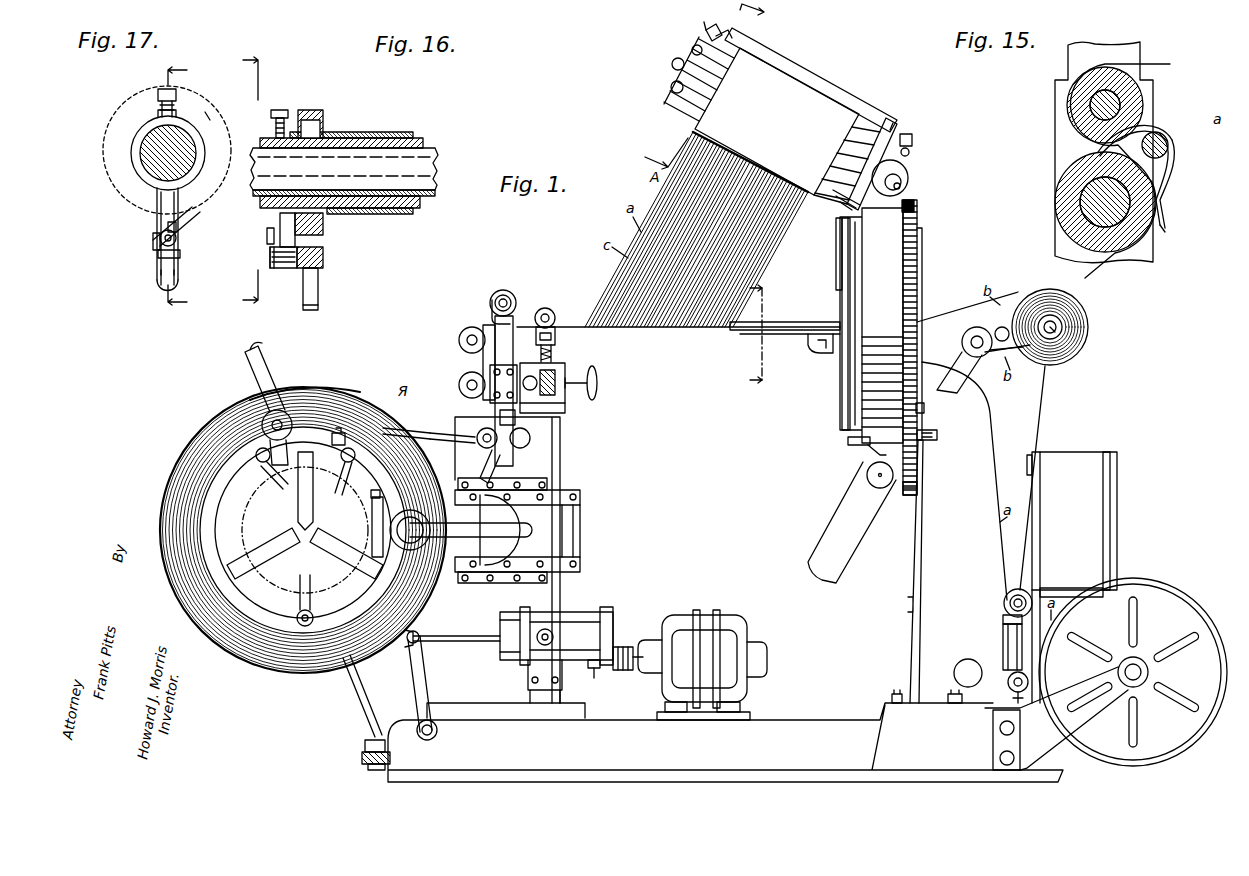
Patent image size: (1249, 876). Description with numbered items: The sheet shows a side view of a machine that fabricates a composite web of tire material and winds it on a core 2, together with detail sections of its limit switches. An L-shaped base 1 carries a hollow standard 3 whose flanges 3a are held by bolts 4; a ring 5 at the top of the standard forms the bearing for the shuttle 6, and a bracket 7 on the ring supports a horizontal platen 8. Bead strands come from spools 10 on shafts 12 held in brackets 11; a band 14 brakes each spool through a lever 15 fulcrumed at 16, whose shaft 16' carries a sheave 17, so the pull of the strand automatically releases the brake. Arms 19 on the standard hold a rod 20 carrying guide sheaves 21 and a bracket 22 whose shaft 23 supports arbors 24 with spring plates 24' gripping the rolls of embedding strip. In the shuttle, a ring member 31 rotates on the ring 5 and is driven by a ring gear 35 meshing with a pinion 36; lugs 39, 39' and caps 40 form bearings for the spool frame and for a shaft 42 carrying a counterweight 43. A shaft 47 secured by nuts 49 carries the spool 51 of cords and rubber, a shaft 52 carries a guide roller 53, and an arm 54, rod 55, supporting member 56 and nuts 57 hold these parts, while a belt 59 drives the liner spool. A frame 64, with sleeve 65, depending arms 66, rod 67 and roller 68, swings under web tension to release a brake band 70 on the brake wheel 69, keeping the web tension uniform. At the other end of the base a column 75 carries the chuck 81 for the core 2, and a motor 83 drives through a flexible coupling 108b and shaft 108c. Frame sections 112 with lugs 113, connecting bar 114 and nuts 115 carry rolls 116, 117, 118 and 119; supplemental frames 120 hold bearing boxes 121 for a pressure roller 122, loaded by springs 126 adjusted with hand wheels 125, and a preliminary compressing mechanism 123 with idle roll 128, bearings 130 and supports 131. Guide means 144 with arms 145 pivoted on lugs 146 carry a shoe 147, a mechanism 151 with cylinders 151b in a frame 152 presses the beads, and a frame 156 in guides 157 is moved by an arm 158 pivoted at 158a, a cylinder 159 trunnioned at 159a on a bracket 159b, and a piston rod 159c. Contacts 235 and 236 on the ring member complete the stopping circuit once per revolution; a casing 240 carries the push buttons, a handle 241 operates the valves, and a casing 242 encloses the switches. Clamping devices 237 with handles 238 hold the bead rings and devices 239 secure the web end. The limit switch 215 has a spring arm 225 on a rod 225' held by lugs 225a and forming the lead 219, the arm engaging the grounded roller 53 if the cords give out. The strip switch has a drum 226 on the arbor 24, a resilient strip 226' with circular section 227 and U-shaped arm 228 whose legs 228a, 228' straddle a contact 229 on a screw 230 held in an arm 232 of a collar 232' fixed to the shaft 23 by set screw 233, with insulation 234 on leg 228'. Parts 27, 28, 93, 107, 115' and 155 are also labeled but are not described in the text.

In FIG. 1, the base 1 is at (806, 722).
In FIG. 1, the core 2 is at (245, 590).
In FIG. 1, the standard 3 is at (915, 580).
In FIG. 1, the flanges 3a is at (935, 702).
In FIG. 1, the bolts 4 is at (889, 690).
In FIG. 1, the ring 5 is at (922, 240).
In FIG. 1, the shuttle 6 is at (849, 436).
In FIG. 1, the bracket 7 is at (816, 352).
In FIG. 1, the platen 8 is at (726, 330).
In FIG. 1, the spool 10 is at (1160, 603).
In FIG. 1, the brackets 11 is at (1060, 745).
In FIG. 1, the shafts 12 is at (1133, 657).
In FIG. 1, the bands 14 is at (1077, 595).
In FIG. 1, the lever 15 is at (1012, 650).
In FIG. 17, the fulcrum 16 is at (172, 185).
In FIG. 1, the fulcrum 16 is at (1002, 687).
In FIG. 1, the shaft 16' is at (998, 618).
In FIG. 16, the guide wheel or sheave 17 is at (259, 179).
In FIG. 1, the guide wheel or sheave 17 is at (1004, 603).
In FIG. 1, the arms 19 is at (959, 368).
In FIG. 1, the rod 20 is at (977, 331).
In FIG. 1, the guide sheaves 21 is at (988, 355).
In FIG. 1, the bracket 22 is at (999, 328).
In FIG. 17, the shaft 23 is at (143, 138).
In FIG. 16, the shaft 23 is at (425, 173).
In FIG. 1, the shaft 23 is at (1055, 340).
In FIG. 16, the arbor 24 is at (360, 173).
In FIG. 1, the arbor 24 is at (1083, 345).
In FIG. 16, the spring plates 24' is at (367, 119).
In FIG. 1, the guide plate 27 is at (793, 334).
In FIG. 1, the guide bar 28 is at (790, 322).
In FIG. 1, the ring member 31 is at (871, 325).
In FIG. 1, the ring gear 35 is at (917, 214).
In FIG. 1, the pinion 36 is at (907, 497).
In FIG. 1, the lugs 39 is at (919, 201).
In FIG. 1, the lugs 39' is at (851, 456).
In FIG. 1, the caps 40 is at (900, 168).
In FIG. 1, the shaft 42 is at (867, 477).
In FIG. 1, the weight 43 is at (822, 548).
In FIG. 1, the shaft 47 is at (672, 64).
In FIG. 1, the nuts 49 is at (901, 180).
In FIG. 1, the spool 51 is at (690, 92).
In FIG. 15, the shaft 52 is at (1090, 200).
In FIG. 15, the guide roller 53 is at (1065, 213).
In FIG. 1, the bracket or arm 54 is at (915, 149).
In FIG. 1, the rod 55 is at (705, 32).
In FIG. 1, the supporting member 56 is at (692, 49).
In FIG. 1, the nuts 57 is at (912, 140).
In FIG. 1, the band or belt 59 is at (836, 225).
In FIG. 1, the frame 64 is at (811, 68).
In FIG. 1, the sleeve 65 is at (822, 86).
In FIG. 15, the depending arms 66 is at (1067, 65).
In FIG. 1, the depending arms 66 is at (731, 37).
In FIG. 15, the rod 67 is at (1092, 107).
In FIG. 15, the roller 68 is at (1075, 121).
In FIG. 1, the roller 68 is at (722, 68).
In FIG. 1, the brake wheel 69 is at (895, 128).
In FIG. 1, the brake band 70 is at (891, 124).
In FIG. 1, the column 75 is at (556, 470).
In FIG. 1, the chuck 81 is at (305, 522).
In FIG. 1, the motor 83 is at (700, 618).
In FIG. 1, the link 93 is at (354, 680).
In FIG. 1, the adjusting nut 107 is at (362, 757).
In FIG. 1, the flexible coupling 108b is at (625, 646).
In FIG. 1, the shaft 108c is at (594, 678).
In FIG. 1, the upright frame sections 112 is at (497, 325).
In FIG. 1, the hollow lugs 113 is at (510, 295).
In FIG. 1, the connecting bar 114 is at (500, 290).
In FIG. 1, the nuts 115 is at (483, 302).
In FIG. 1, the reel hub shaft 115' is at (437, 530).
In FIG. 1, the roll 116 is at (461, 337).
In FIG. 1, the roll 117 is at (483, 350).
In FIG. 1, the roll 118 is at (463, 376).
In FIG. 1, the roll 119 is at (518, 412).
In FIG. 1, the supplemental frames 120 is at (560, 393).
In FIG. 1, the bearing boxes 121 is at (520, 367).
In FIG. 1, the roller 122 is at (575, 395).
In FIG. 1, the preliminary compressing mechanism 123 is at (552, 326).
In FIG. 1, the hand wheels 125 is at (597, 383).
In FIG. 1, the compression springs 126 is at (560, 370).
In FIG. 1, the idle roll 128 is at (540, 308).
In FIG. 1, the bearings 130 is at (556, 338).
In FIG. 1, the supports 131 is at (556, 352).
In FIG. 1, the guide means 144 is at (412, 428).
In FIG. 1, the arms 145 is at (452, 444).
In FIG. 1, the lugs 146 is at (483, 447).
In FIG. 1, the shoe 147 is at (350, 388).
In FIG. 1, the bead compressing mechanism 151 is at (262, 420).
In FIG. 1, the cylinders 151b is at (268, 440).
In FIG. 1, the frame 152 is at (270, 373).
In FIG. 1, the bearing housing 155 is at (587, 531).
In FIG. 1, the frame 156 is at (514, 530).
In FIG. 1, the guides 157 is at (575, 500).
In FIG. 1, the arm 158 is at (415, 690).
In FIG. 1, the pivot 158a is at (438, 733).
In FIG. 1, the cylinder 159 is at (605, 618).
In FIG. 1, the trunnion 159a is at (550, 630).
In FIG. 1, the bracket 159b is at (528, 672).
In FIG. 1, the piston rod 159c is at (484, 635).
In FIG. 15, the limit switch 215 is at (1181, 219).
In FIG. 17, the lead 219 is at (178, 232).
In FIG. 16, the lead 219 is at (267, 242).
In FIG. 15, the spring arm 225 is at (1150, 179).
In FIG. 15, the rod 225' is at (1173, 131).
In FIG. 15, the lugs 225a is at (1176, 149).
In FIG. 17, the drum 226 is at (194, 95).
In FIG. 16, the drum 226 is at (341, 158).
In FIG. 17, the strip 226' is at (187, 226).
In FIG. 17, the circular section 227 is at (212, 120).
In FIG. 16, the circular section 227 is at (320, 118).
In FIG. 17, the U-shaped arm 228 is at (195, 297).
In FIG. 16, the U-shaped arm 228 is at (326, 316).
In FIG. 17, the leg 228' is at (139, 279).
In FIG. 16, the leg 228' is at (335, 286).
In FIG. 17, the leg 228a is at (165, 290).
In FIG. 17, the contact 229 is at (180, 256).
In FIG. 16, the contact 229 is at (323, 258).
In FIG. 17, the screw 230 is at (160, 235).
In FIG. 16, the screw 230 is at (264, 273).
In FIG. 17, the arm 232 is at (124, 234).
In FIG. 16, the arm 232 is at (274, 230).
In FIG. 17, the collar 232' is at (135, 153).
In FIG. 16, the collar 232' is at (260, 226).
In FIG. 17, the set screw 233 is at (160, 92).
In FIG. 16, the set screw 233 is at (285, 117).
In FIG. 17, the insulating section 234 is at (153, 242).
In FIG. 1, the contact 235 is at (924, 408).
In FIG. 1, the contact 236 is at (927, 440).
In FIG. 1, the clamping devices 237 is at (260, 463).
In FIG. 1, the handles 238 is at (372, 525).
In FIG. 1, the securing devices 239 is at (345, 465).
In FIG. 1, the casing 240 is at (530, 412).
In FIG. 1, the handle 241 is at (480, 480).
In FIG. 1, the casing 242 is at (1088, 470).